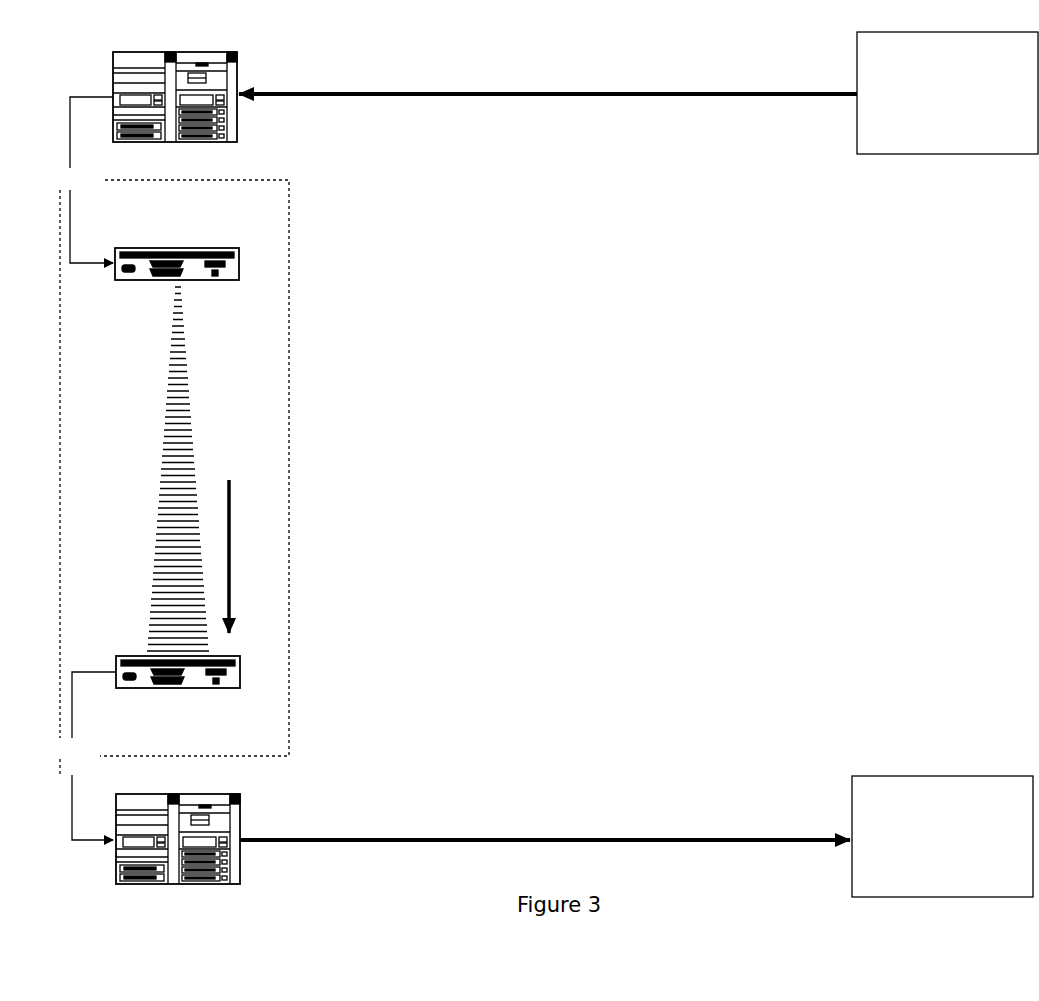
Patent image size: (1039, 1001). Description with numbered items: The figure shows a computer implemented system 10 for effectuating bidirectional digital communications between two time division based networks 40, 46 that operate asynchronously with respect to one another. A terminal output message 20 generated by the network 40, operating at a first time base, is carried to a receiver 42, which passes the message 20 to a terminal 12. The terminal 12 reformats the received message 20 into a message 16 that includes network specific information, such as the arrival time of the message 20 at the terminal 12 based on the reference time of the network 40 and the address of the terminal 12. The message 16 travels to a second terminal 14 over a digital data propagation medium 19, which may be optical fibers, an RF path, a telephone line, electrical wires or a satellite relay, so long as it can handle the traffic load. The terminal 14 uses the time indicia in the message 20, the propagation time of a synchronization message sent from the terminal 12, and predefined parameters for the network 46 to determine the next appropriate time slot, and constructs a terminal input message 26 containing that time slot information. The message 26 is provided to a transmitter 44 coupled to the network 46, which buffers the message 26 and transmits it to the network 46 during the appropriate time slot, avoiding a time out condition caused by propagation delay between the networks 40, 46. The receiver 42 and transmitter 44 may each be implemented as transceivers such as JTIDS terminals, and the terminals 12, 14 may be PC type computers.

The computer implemented system 10 is at (292, 467).
The terminal 12 is at (198, 279).
The second terminal 14 is at (208, 689).
The message 16 is at (228, 540).
The digital data propagation medium 19 is at (165, 393).
The terminal output message 20 is at (622, 92).
The terminal input message 26 is at (618, 835).
The network 40 is at (947, 93).
The receiver 42 is at (222, 130).
The transmitter 44 is at (240, 870).
The network 46 is at (942, 836).